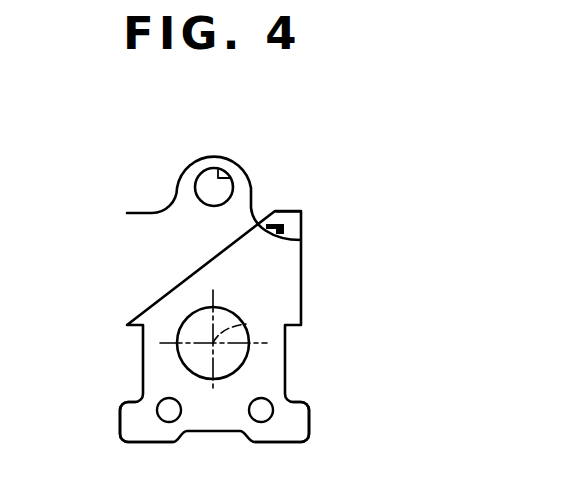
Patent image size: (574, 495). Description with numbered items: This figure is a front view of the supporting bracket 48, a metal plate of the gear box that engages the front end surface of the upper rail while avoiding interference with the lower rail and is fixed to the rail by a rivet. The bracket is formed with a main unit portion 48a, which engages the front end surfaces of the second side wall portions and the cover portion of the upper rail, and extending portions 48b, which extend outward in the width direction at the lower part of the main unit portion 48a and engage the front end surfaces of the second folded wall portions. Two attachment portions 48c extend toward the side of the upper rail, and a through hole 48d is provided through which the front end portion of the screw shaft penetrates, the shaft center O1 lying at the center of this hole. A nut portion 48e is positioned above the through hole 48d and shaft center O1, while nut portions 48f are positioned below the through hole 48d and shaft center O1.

The supporting bracket 48 is at (275, 135).
The main unit portion 48a is at (289, 278).
The extending portions 48b is at (128, 421).
The attachment portion 48c is at (276, 215).
The through hole 48d is at (240, 360).
The nut portion 48e is at (230, 178).
The nut portions 48f is at (170, 412).
The shaft center O1 is at (243, 326).